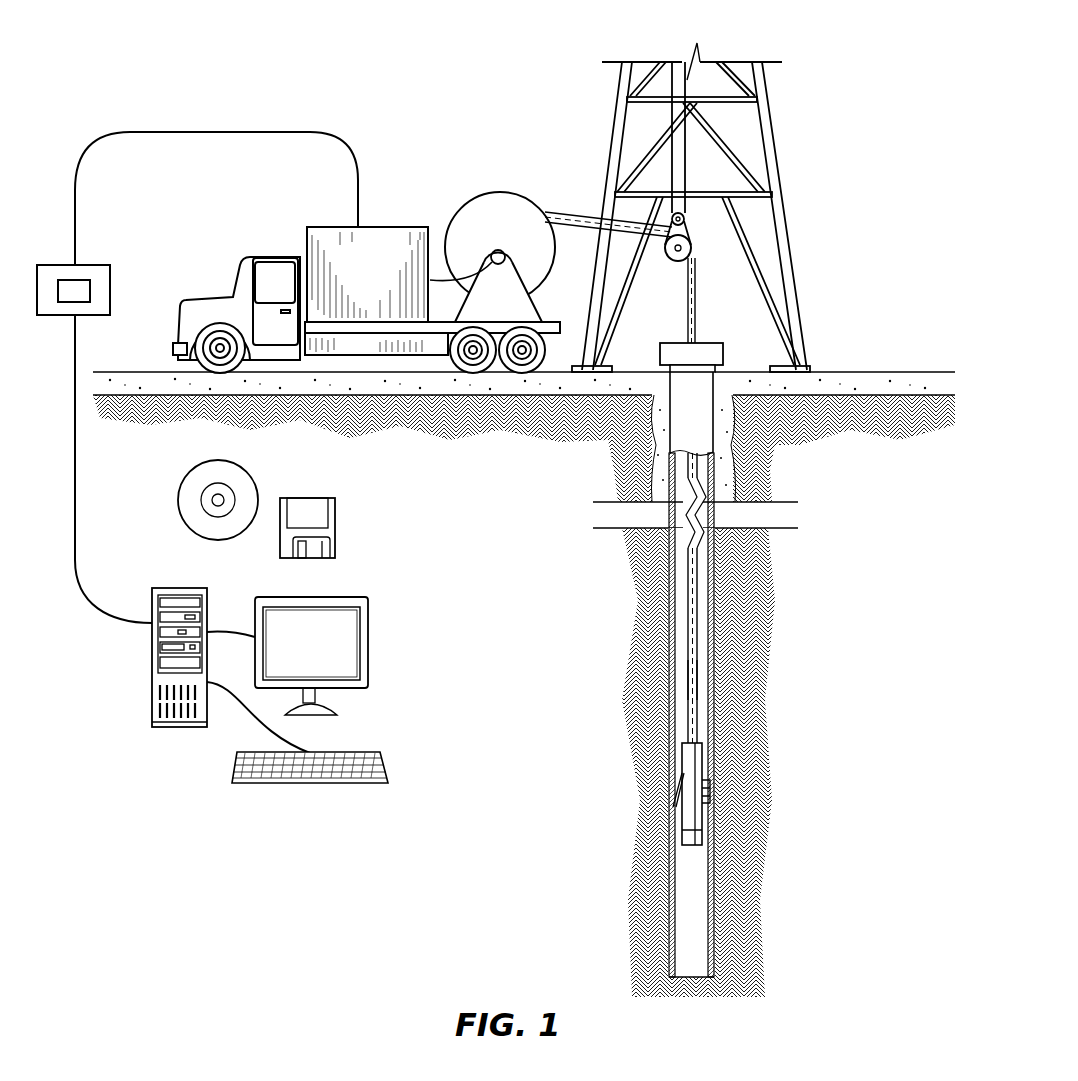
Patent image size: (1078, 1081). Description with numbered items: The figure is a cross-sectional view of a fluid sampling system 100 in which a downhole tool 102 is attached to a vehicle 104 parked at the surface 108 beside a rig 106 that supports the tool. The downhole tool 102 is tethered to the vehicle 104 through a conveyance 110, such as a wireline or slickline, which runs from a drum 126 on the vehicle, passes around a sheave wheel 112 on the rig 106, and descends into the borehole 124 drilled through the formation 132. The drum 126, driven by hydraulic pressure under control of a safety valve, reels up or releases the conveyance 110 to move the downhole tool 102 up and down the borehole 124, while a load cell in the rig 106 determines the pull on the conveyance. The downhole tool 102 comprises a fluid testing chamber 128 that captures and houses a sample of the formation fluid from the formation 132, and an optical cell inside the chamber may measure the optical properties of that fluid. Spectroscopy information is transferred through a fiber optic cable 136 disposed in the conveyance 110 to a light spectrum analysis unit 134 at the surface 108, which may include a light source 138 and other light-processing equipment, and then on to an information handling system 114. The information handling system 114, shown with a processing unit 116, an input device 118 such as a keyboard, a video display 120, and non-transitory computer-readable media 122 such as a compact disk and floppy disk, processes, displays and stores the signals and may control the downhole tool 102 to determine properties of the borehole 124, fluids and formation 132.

The fluid sampling system 100 is at (174, 54).
The downhole tool 102 is at (659, 822).
The vehicle 104 is at (378, 227).
The rig 106 is at (782, 211).
The surface 108 is at (848, 372).
The conveyance 110 is at (687, 612).
The sheave wheel 112 is at (676, 262).
The information handling system 114 is at (171, 813).
The processing unit 116 is at (180, 588).
The input device 118 is at (388, 765).
The video display 120 is at (310, 597).
The non-transitory computer-readable media 122 is at (307, 498).
The borehole 124 is at (784, 482).
The drum 126 is at (498, 193).
The fluid testing chamber 128 is at (687, 758).
The formation 132 is at (882, 604).
The light spectrum analysis unit 134 is at (103, 265).
The fiber optic cable 136 is at (690, 677).
The light source 138 is at (78, 302).